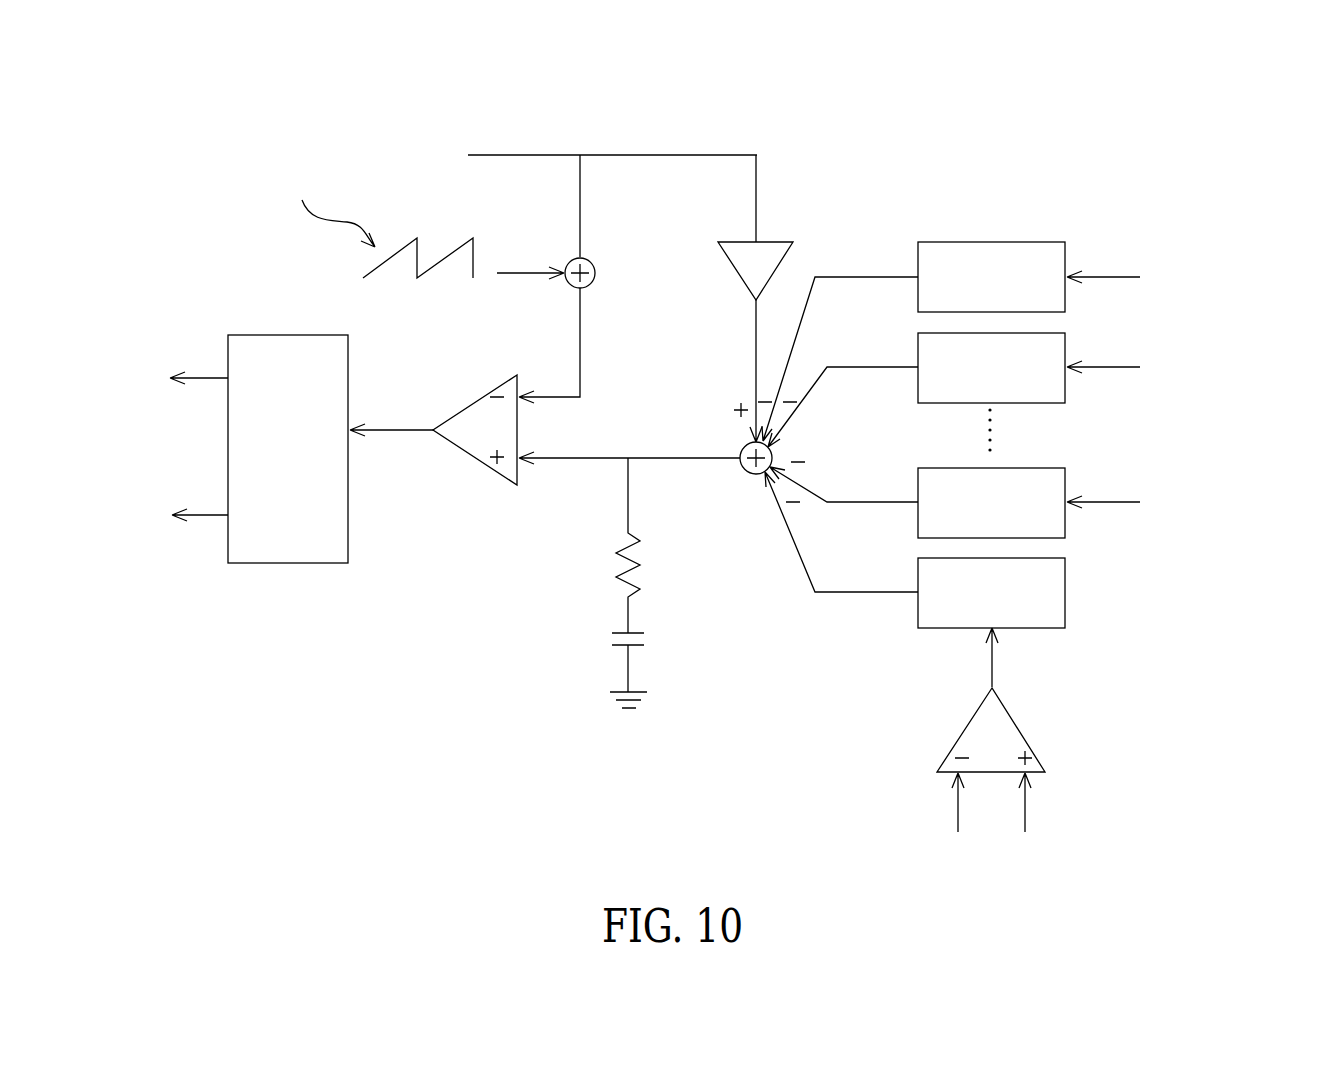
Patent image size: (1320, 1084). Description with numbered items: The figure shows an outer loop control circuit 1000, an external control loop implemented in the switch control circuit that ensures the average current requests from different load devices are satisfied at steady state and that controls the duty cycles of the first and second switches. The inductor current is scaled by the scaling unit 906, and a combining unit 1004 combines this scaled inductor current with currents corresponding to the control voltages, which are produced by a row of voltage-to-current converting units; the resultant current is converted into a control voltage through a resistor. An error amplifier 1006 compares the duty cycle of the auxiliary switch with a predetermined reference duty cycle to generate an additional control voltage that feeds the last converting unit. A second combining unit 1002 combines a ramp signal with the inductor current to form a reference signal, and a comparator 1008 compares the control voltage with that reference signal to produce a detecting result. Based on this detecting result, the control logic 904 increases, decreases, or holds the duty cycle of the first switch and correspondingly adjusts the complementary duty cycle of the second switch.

The outer loop control circuit 1000 is at (1145, 168).
The combining unit 1002 is at (598, 273).
The combining unit 1004 is at (750, 477).
The error amplifier 1006 is at (1017, 727).
The comparator 1008 is at (480, 457).
The control logic 904 is at (288, 563).
The scaling unit 906 is at (738, 272).